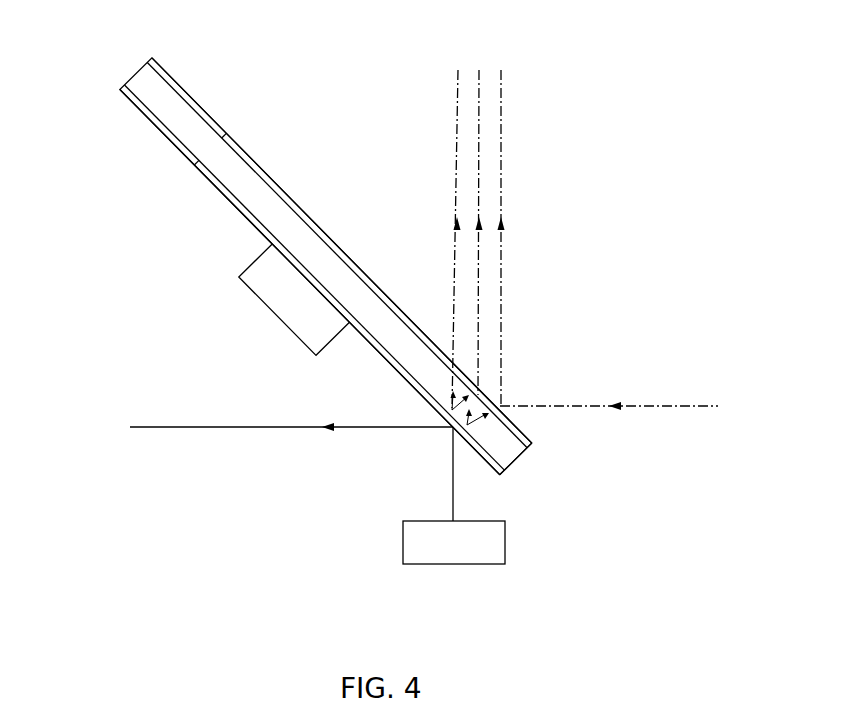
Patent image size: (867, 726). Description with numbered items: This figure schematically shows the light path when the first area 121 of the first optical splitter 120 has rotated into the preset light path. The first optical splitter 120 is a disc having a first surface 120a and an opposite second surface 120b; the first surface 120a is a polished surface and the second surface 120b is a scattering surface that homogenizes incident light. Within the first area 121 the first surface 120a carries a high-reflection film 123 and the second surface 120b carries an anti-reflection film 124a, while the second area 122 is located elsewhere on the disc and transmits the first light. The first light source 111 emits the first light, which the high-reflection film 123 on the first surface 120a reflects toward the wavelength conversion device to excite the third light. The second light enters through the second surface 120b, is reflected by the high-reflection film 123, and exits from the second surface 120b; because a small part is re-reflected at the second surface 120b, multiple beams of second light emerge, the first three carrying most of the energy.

The first optical splitter 120 is at (351, 299).
The first surface 120a is at (218, 188).
The second surface 120b is at (243, 155).
The anti-reflection film 124a is at (283, 193).
The first area 121 is at (320, 247).
The second area 122 is at (507, 443).
The high-reflection film 123 is at (387, 357).
The first light source 111 is at (505, 541).